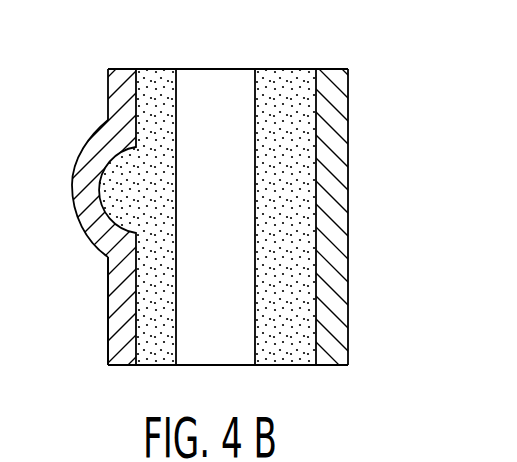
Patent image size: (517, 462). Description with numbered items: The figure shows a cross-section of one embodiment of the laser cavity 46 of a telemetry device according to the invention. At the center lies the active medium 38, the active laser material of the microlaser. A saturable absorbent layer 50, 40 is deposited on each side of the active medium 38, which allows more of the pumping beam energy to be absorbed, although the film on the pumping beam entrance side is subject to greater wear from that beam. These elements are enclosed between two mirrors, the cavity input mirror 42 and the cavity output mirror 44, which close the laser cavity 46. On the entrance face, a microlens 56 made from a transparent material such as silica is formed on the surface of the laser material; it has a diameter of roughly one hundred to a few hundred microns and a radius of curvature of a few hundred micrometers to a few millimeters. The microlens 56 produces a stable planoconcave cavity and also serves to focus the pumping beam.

The active medium 38 is at (217, 77).
The thin saturable absorbent layer 40 is at (293, 80).
The cavity input mirror 42 is at (107, 90).
The cavity output mirror 44 is at (350, 130).
The laser cavity 46 is at (98, 322).
The saturable absorbent layer 50 is at (147, 70).
The microlens 56 is at (88, 233).